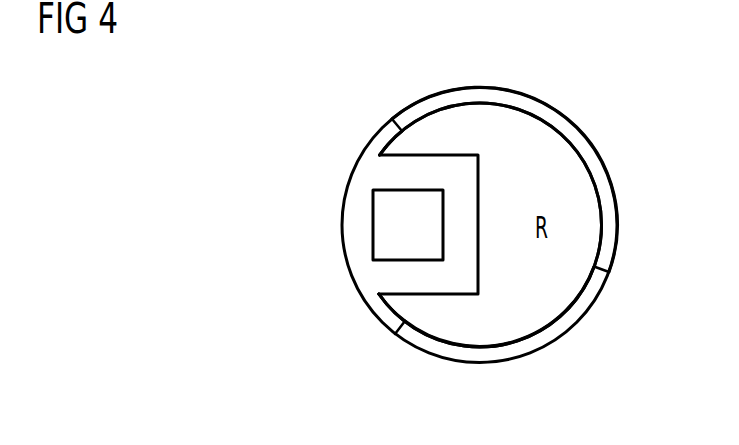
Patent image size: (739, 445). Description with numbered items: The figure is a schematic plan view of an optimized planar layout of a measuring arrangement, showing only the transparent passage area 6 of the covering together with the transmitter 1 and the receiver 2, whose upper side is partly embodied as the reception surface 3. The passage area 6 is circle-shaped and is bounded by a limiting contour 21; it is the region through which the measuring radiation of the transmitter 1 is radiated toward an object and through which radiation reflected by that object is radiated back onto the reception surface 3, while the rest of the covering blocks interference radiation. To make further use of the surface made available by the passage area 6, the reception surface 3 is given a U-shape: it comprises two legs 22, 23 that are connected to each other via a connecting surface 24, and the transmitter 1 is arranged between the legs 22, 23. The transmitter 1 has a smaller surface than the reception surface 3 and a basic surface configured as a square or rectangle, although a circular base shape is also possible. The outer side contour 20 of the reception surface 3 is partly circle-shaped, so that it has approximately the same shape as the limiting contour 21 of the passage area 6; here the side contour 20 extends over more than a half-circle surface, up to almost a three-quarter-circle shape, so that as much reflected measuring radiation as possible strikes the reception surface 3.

The transmitter 1 is at (373, 228).
The receiver 2 is at (587, 227).
The reception surface 3 is at (633, 227).
The passage area 6 is at (350, 176).
The side contour 20 is at (393, 121).
The limiting contour 21 is at (610, 175).
The leg 22 is at (428, 130).
The leg 23 is at (428, 322).
The connecting surface 24 is at (563, 278).